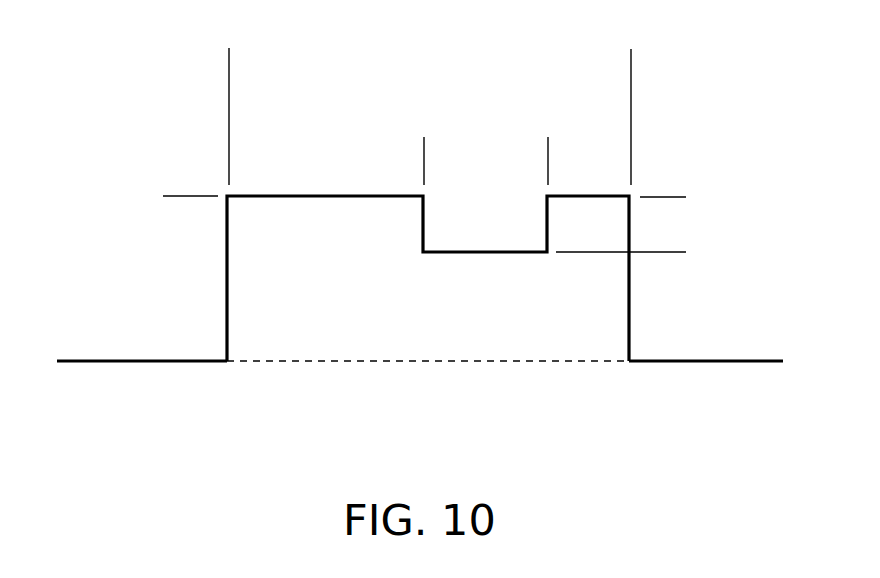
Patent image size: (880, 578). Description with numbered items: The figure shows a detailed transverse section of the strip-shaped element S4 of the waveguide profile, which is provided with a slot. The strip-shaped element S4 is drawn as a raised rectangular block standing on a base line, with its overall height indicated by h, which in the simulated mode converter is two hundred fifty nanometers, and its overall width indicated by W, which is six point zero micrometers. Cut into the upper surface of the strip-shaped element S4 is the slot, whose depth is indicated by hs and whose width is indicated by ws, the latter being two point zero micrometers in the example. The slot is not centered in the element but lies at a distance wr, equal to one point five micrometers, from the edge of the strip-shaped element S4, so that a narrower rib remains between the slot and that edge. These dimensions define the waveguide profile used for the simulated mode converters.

The strip-shaped element S4 is at (526, 298).
The width of the strip-shaped element W is at (631, 59).
The width of the slot ws is at (548, 147).
The distance of the slot to the edge of the strip-shaped element wr is at (631, 147).
The height of the strip-shaped element h is at (173, 198).
The depth of the slot hs is at (677, 198).